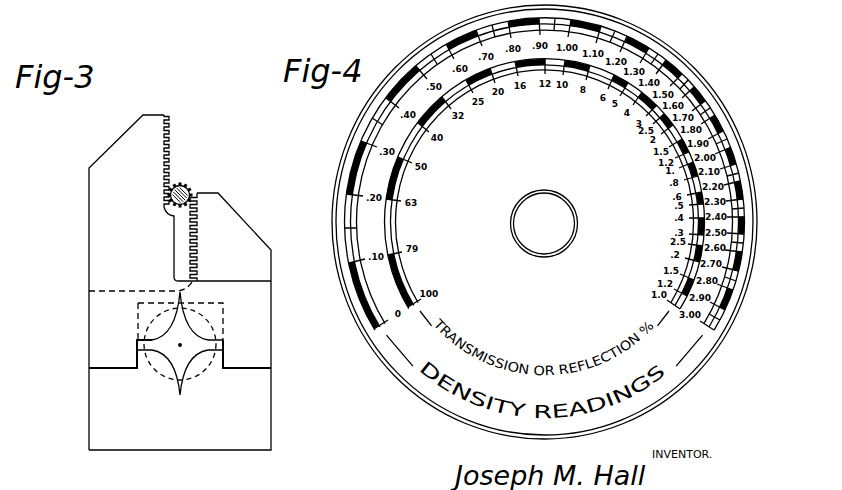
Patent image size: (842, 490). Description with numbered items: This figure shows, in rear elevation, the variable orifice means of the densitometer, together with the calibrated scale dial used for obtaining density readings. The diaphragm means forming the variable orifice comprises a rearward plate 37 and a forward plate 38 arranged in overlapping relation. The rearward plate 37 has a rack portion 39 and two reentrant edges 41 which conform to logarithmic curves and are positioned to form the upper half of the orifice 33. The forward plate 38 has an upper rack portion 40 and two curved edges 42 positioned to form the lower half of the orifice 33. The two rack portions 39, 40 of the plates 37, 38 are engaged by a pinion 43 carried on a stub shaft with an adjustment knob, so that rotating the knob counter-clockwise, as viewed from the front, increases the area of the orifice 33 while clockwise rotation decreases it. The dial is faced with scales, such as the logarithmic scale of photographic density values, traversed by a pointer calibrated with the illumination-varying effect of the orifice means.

The orifice 33 is at (188, 344).
The rearward plate 37 is at (90, 260).
The forward plate 38 is at (265, 262).
The rack portion 39 is at (170, 153).
The upper rack portion 40 is at (197, 203).
The reentrant edges 41 is at (163, 333).
The curved edges 42 is at (164, 361).
The pinion 43 is at (184, 185).